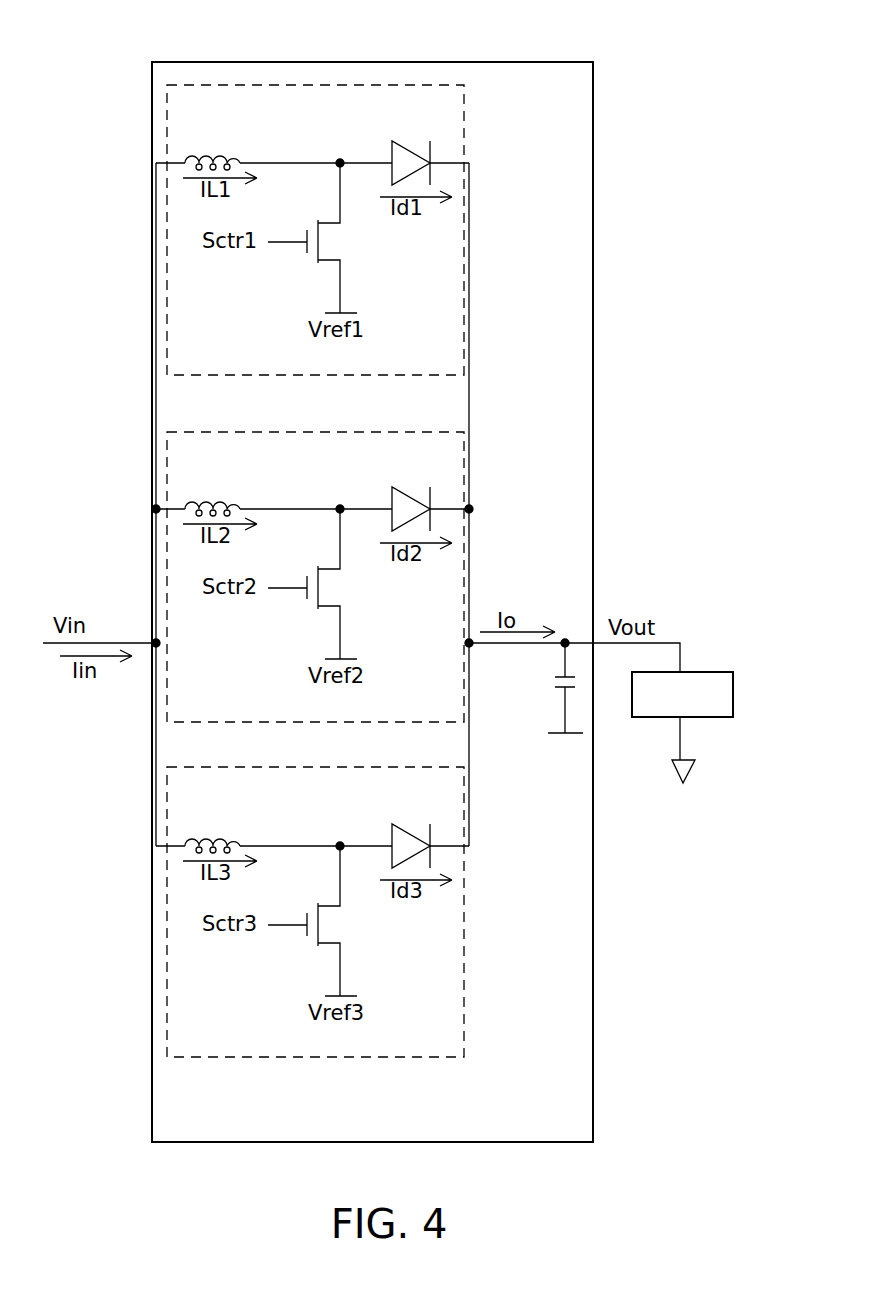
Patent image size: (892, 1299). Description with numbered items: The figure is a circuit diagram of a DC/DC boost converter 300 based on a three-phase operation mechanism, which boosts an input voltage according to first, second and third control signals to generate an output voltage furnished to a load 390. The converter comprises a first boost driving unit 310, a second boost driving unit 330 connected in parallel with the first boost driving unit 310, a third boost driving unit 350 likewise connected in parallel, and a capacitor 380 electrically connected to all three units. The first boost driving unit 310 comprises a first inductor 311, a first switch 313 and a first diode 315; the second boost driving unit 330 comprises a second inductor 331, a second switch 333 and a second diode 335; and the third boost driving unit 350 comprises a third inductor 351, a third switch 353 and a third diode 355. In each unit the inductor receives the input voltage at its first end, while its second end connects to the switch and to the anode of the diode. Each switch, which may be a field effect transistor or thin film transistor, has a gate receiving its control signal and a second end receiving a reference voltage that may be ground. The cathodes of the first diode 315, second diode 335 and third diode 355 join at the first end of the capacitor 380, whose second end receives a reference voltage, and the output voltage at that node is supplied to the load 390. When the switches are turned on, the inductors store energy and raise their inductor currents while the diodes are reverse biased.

The DC/DC boost converter 300 is at (370, 62).
The first boost driving unit 310 is at (465, 238).
The first inductor 311 is at (227, 156).
The first switch 313 is at (333, 244).
The first diode 315 is at (405, 148).
The second boost driving unit 330 is at (465, 587).
The second inductor 331 is at (227, 503).
The second switch 333 is at (333, 590).
The second diode 335 is at (405, 495).
The third boost driving unit 350 is at (465, 920).
The third inductor 351 is at (227, 838).
The third switch 353 is at (333, 927).
The third diode 355 is at (405, 830).
The capacitor 380 is at (553, 686).
The load 390 is at (705, 672).